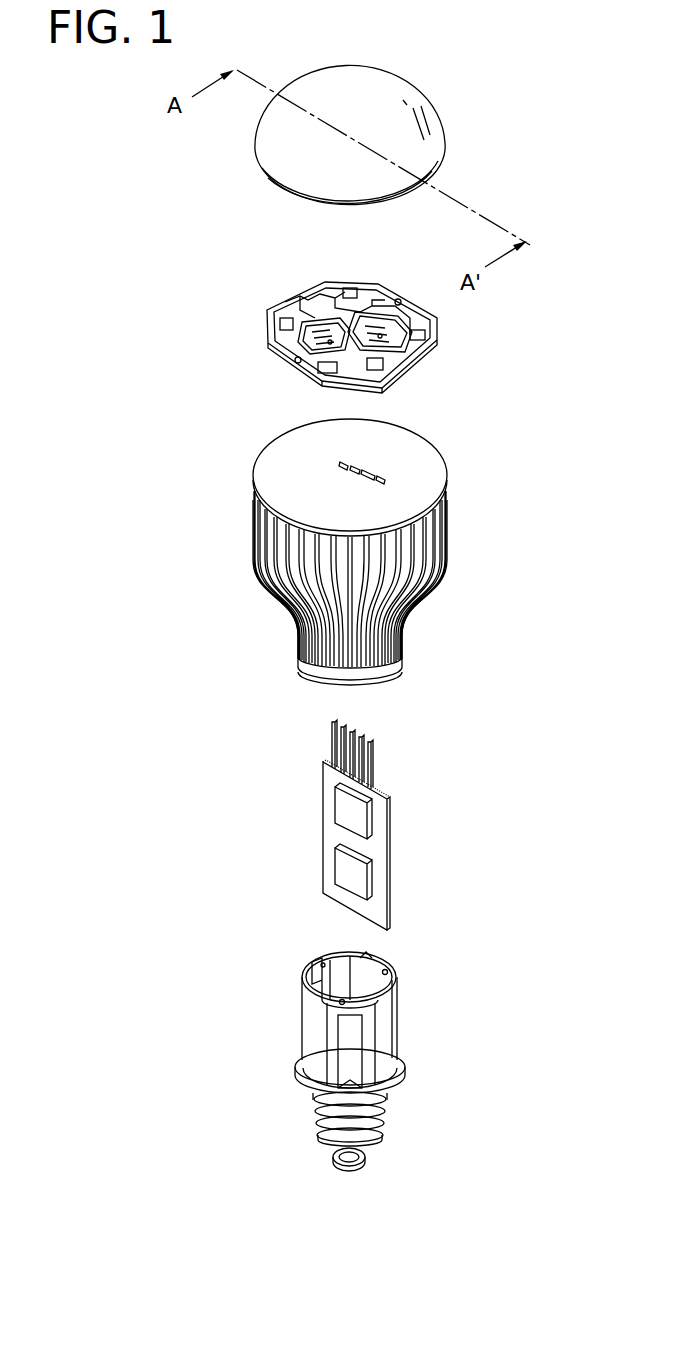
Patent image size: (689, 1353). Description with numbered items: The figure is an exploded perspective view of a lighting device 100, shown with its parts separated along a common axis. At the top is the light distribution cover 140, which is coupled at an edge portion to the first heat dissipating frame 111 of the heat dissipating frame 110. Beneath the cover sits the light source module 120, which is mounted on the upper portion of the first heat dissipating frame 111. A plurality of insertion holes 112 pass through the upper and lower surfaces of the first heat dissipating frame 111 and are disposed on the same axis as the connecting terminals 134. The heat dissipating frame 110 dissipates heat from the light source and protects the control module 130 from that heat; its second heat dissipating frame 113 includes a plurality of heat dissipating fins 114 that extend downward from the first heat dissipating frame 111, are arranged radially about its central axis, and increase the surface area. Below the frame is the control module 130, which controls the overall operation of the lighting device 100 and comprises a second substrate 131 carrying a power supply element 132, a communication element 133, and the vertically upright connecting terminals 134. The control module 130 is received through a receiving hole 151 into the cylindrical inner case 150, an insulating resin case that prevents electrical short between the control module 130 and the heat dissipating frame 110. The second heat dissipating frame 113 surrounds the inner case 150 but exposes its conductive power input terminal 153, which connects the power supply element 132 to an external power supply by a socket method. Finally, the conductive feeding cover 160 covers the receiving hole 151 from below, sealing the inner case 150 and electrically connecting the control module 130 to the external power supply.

The lighting device 100 is at (515, 46).
The heat dissipating frame 110 is at (362, 544).
The first heat dissipating frame 111 is at (272, 463).
The insertion holes 112 is at (343, 463).
The second heat dissipating frame 113 is at (270, 552).
The heat dissipating fins 114 is at (405, 620).
The light source module 120 is at (270, 295).
The control module 130 is at (381, 825).
The second substrate 131 is at (388, 892).
The power supply element 132 is at (338, 872).
The communication element 133 is at (340, 808).
The connecting terminals 134 is at (378, 764).
The light distribution cover 140 is at (437, 130).
The inner case 150 is at (356, 1007).
The receiving hole 151 is at (343, 980).
The power input terminal 153 is at (387, 1110).
The feeding cover 160 is at (365, 1158).